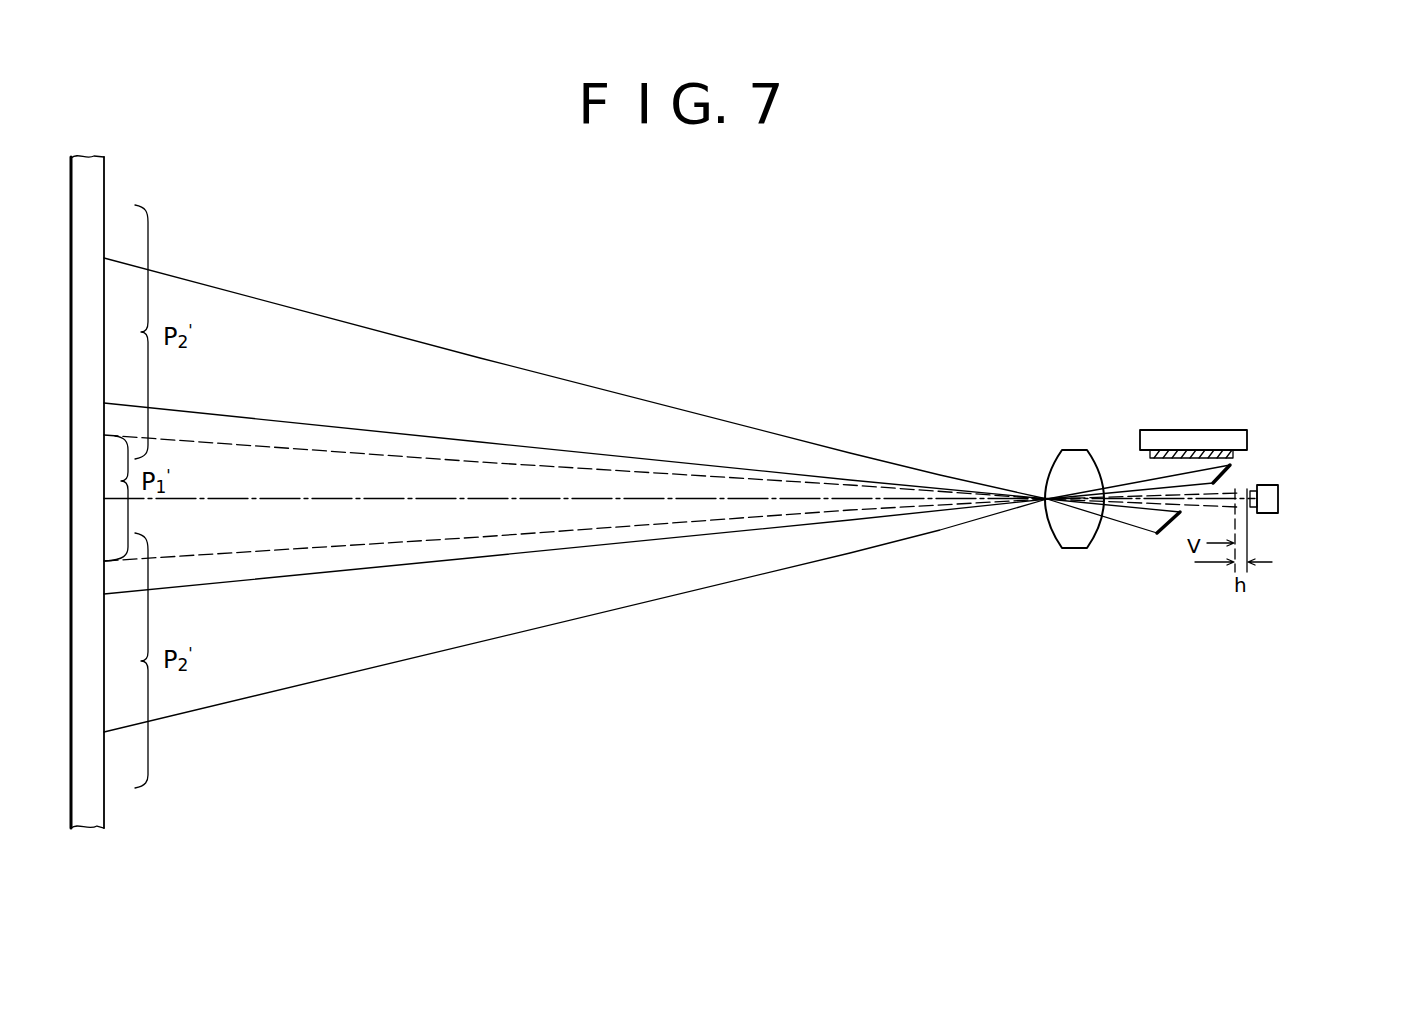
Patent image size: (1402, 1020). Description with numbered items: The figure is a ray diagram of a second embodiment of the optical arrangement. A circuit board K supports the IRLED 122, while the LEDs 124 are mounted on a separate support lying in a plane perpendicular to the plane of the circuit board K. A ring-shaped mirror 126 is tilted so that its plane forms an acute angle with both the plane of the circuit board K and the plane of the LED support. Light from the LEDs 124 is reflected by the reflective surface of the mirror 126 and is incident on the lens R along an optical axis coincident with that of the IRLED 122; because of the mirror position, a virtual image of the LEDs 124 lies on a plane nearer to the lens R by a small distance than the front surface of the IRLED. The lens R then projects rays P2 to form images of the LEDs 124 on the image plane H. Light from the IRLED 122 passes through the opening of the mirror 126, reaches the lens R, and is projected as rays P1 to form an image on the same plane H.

The image plane H is at (97, 806).
The lens R is at (1080, 540).
The circuit board K is at (1278, 495).
The IRLED 122 is at (1250, 510).
The LEDs 124 is at (1183, 450).
The ring-shaped mirror 126 is at (1232, 476).
The rays P1 is at (516, 538).
The rays P2 is at (671, 461).